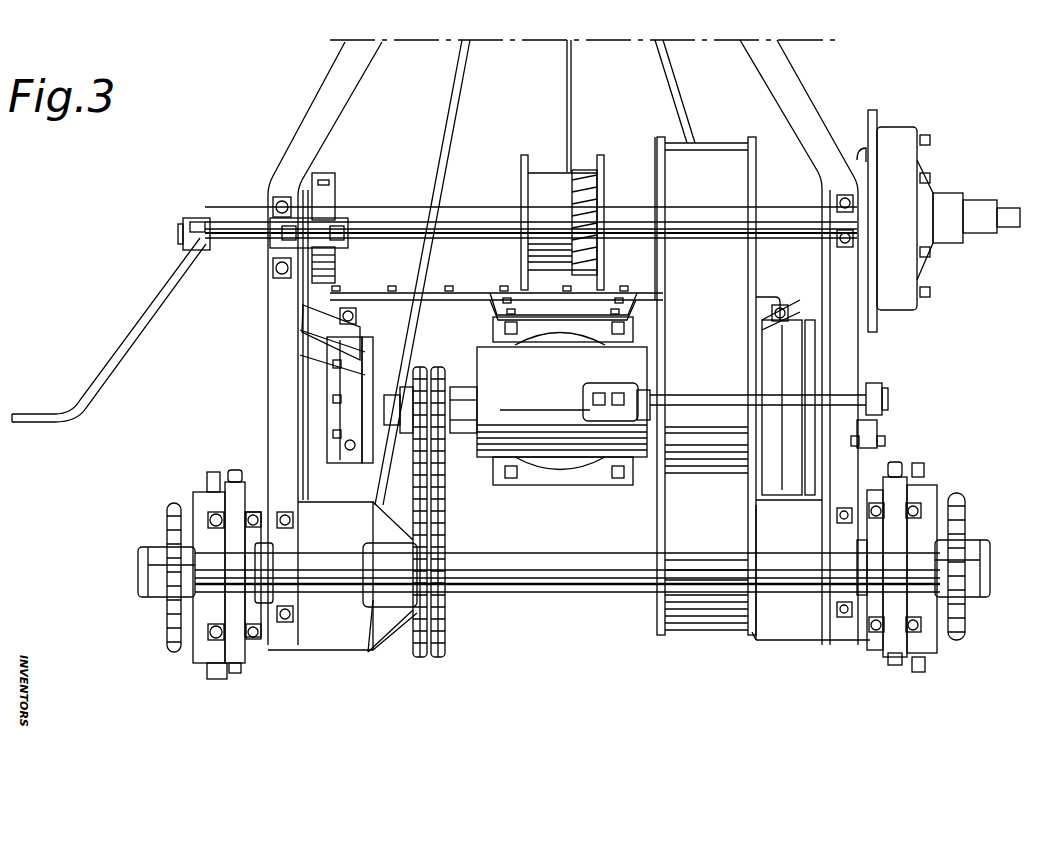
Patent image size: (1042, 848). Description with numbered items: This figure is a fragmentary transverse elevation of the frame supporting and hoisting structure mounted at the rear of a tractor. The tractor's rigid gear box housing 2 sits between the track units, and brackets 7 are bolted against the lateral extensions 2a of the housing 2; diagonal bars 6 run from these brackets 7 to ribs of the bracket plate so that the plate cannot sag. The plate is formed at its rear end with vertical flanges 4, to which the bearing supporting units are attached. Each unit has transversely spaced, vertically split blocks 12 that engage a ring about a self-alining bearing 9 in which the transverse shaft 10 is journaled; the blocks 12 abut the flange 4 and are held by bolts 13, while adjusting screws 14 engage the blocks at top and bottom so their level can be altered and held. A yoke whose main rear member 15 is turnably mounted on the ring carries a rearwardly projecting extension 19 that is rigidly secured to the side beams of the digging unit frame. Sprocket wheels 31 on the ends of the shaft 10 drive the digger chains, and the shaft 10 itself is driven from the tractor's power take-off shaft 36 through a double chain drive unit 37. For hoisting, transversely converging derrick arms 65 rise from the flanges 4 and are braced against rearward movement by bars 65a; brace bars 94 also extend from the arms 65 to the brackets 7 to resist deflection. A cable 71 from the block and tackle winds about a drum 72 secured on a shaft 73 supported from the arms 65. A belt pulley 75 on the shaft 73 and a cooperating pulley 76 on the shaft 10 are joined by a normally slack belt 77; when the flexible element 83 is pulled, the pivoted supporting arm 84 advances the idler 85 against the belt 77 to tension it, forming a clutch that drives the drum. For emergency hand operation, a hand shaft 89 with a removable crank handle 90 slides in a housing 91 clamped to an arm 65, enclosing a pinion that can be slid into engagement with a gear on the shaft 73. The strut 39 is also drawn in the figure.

The gear box housing 2 is at (577, 473).
The lateral extensions of the housing 2a is at (768, 297).
The vertical flanges 4 is at (895, 157).
The diagonal bars 6 is at (343, 427).
The brackets 7 is at (350, 388).
The self-alining bearings 9 is at (863, 540).
The transverse shaft 10 is at (520, 593).
The blocks 12 is at (230, 570).
The bolts 13 is at (214, 520).
The adjusting screws 14 is at (207, 485).
The main rear member of the yoke 15 is at (157, 607).
The rearwardly projecting extensions 19 is at (212, 678).
The sprocket wheels 31 is at (168, 622).
The power take-off shaft 36 is at (390, 393).
The double chain drive unit 37 is at (445, 497).
The bracket strut 39 is at (368, 652).
The derrick arms 65 is at (290, 357).
The brace bars 65a is at (443, 92).
The cable 71 is at (570, 96).
The drum 72 is at (542, 190).
The shaft 73 is at (463, 217).
The belt pulley 75 is at (752, 177).
The pulley 76 is at (658, 605).
The belt 77 is at (700, 262).
The flexible element 83 is at (865, 372).
The pivoted supporting arm 84 is at (652, 408).
The idler 85 is at (683, 453).
The hand shaft 89 is at (212, 252).
The crank handle 90 is at (40, 413).
The housing 91 is at (303, 233).
The brace bars 94 is at (318, 323).